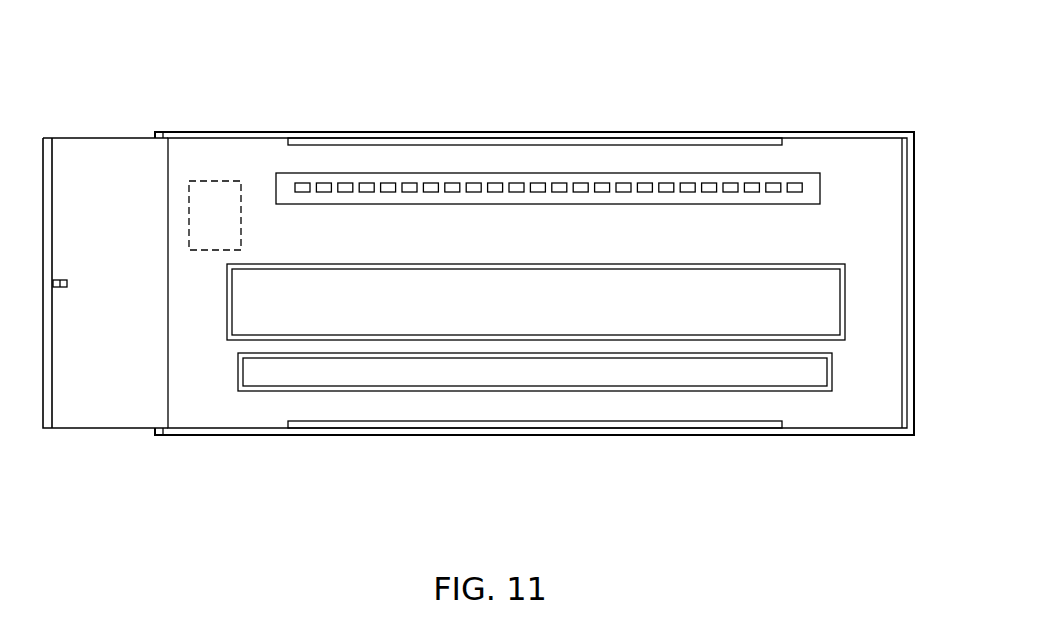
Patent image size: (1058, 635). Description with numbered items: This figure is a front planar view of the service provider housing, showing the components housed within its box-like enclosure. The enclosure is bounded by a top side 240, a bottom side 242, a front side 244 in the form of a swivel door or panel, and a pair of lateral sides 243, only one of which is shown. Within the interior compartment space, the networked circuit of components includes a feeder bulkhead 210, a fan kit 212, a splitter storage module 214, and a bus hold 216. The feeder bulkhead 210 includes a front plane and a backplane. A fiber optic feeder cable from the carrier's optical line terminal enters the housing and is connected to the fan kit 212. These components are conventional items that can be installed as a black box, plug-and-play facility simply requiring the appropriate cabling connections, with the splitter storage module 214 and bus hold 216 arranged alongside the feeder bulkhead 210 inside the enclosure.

The feeder bulkhead 210 is at (349, 173).
The fan kit 212 is at (213, 181).
The splitter storage module 214 is at (362, 323).
The bus hold 216 is at (475, 369).
The top side 240 is at (552, 128).
The bottom side 242 is at (688, 435).
The lateral side 243 is at (906, 298).
The front side 244 is at (122, 297).